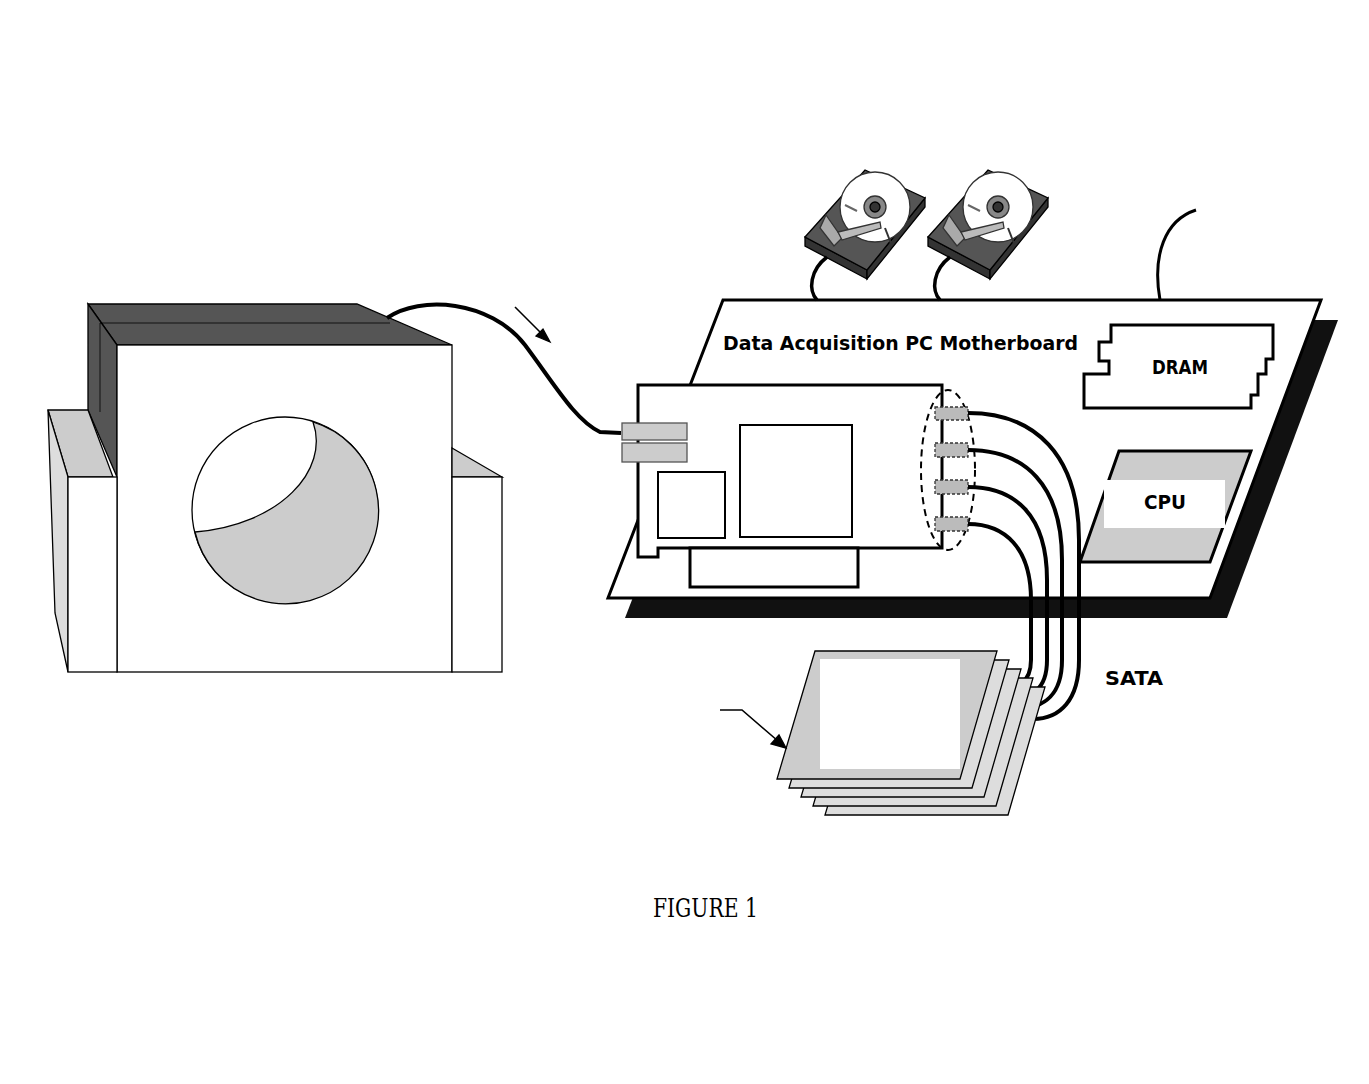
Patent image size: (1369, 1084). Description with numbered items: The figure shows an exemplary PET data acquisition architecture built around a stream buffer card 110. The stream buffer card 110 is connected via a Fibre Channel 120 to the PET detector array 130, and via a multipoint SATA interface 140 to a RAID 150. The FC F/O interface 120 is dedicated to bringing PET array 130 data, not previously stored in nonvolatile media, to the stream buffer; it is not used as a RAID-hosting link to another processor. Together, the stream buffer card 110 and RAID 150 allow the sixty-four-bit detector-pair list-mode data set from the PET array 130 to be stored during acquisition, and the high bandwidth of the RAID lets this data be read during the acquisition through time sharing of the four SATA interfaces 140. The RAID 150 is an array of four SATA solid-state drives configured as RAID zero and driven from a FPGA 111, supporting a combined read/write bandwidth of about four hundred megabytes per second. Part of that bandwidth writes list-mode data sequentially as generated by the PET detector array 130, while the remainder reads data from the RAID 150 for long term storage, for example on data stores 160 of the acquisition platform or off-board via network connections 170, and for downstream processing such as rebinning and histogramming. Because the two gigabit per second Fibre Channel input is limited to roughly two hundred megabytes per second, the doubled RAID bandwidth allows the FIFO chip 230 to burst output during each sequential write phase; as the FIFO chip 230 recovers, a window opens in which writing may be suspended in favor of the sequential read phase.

The stream buffer card 110 is at (782, 486).
The FPGA 111 is at (796, 481).
The Fibre Channel 120 is at (519, 320).
The PET detector array 130 is at (275, 438).
The multipoint SATA interface 140 is at (960, 462).
The RAID 150 is at (687, 736).
The data stores 160 is at (909, 191).
The network connections 170 is at (1243, 254).
The FIFO chip 230 is at (691, 505).